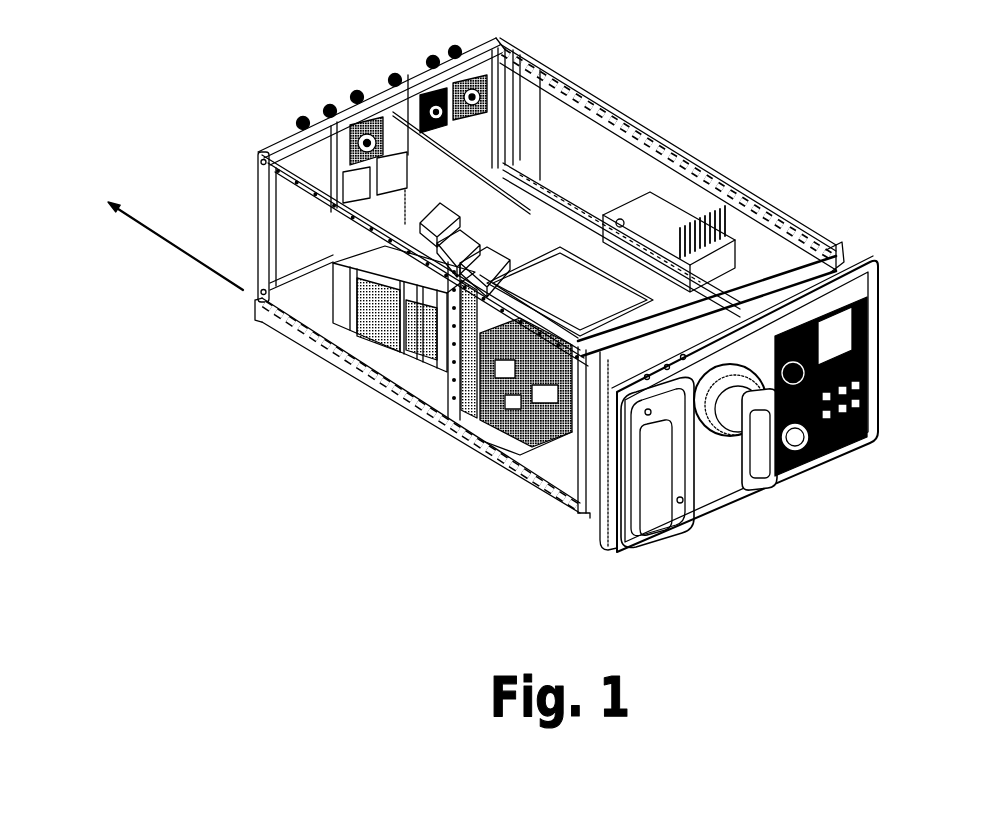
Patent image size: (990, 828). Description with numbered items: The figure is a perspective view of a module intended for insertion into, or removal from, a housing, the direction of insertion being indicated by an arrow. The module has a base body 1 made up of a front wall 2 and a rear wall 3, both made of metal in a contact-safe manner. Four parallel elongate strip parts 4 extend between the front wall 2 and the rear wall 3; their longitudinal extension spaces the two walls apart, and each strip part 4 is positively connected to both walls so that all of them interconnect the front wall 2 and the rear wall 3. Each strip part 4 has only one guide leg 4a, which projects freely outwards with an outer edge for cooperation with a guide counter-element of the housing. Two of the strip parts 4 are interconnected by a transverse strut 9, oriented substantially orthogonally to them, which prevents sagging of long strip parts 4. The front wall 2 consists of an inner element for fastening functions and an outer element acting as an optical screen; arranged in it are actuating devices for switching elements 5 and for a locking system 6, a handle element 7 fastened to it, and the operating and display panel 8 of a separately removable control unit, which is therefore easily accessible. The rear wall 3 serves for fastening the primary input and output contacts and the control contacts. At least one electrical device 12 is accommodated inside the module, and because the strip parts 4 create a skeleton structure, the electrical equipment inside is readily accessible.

The base body 1 is at (535, 331).
The front wall 2 is at (781, 435).
The rear wall 3 is at (258, 198).
The strip part 4 is at (707, 163).
The guide leg 4a is at (750, 192).
The switching elements 5 is at (813, 440).
The locking system 6 is at (762, 446).
The handle element 7 is at (693, 518).
The operating and display panel 8 is at (867, 400).
The transverse strut 9 is at (420, 408).
The electrical device 12 is at (343, 332).